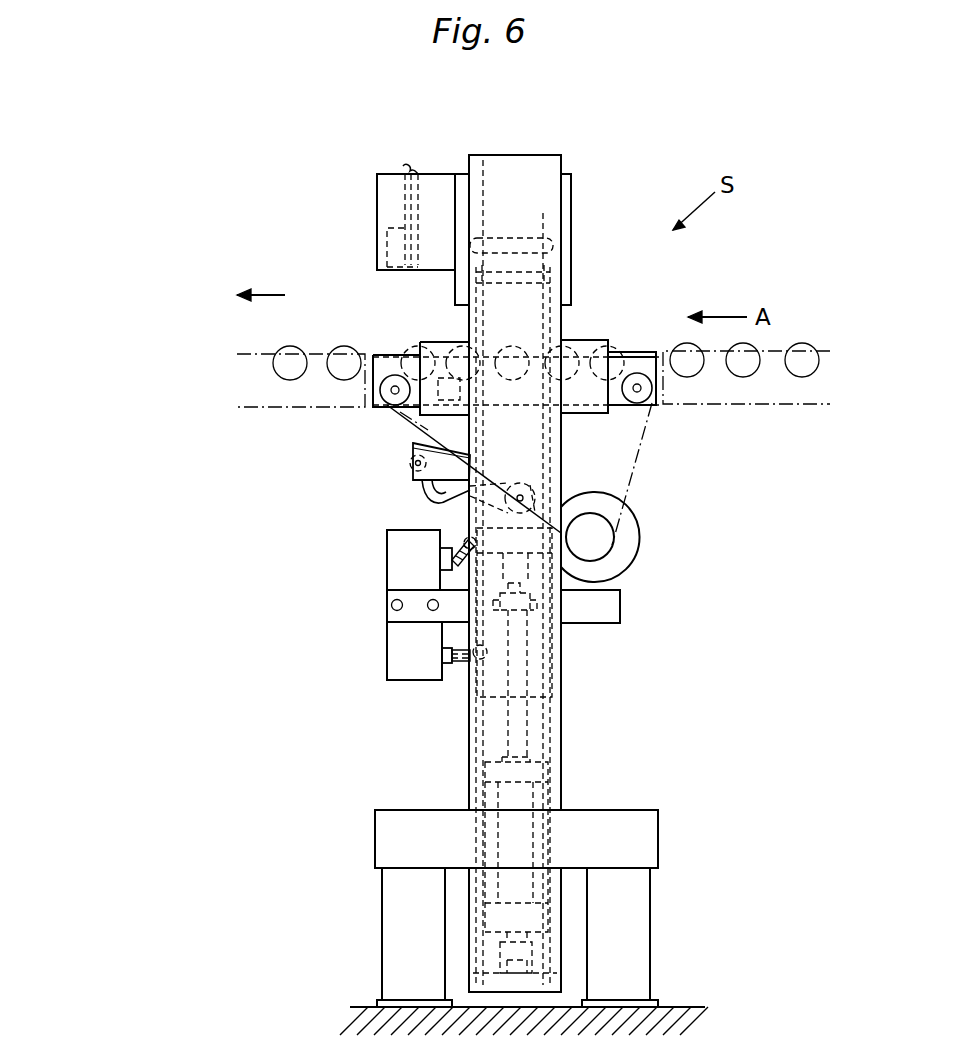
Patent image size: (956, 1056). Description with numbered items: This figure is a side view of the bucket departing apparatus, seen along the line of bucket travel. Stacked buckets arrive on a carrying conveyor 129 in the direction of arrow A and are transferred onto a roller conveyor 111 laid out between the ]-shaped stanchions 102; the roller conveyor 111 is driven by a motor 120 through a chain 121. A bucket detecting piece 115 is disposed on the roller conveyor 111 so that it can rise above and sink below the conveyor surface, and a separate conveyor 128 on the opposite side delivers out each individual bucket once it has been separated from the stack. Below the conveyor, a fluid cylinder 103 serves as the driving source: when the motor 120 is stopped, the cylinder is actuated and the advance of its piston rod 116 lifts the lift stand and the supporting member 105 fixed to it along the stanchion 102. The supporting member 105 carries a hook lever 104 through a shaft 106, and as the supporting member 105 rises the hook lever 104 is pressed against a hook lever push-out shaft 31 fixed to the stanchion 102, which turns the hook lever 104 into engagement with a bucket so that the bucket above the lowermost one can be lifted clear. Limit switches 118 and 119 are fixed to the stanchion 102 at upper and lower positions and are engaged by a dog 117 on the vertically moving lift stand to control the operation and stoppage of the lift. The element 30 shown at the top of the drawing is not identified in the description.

The head unit 30 is at (422, 193).
The hook lever push-out shaft 31 is at (553, 248).
The stanchion 102 is at (552, 742).
The fluid cylinder 103 is at (522, 795).
The hook lever 104 is at (483, 160).
The supporting member 105 is at (555, 645).
The shaft 106 is at (530, 285).
The roller conveyor 111 is at (633, 360).
The bucket detecting piece 115 is at (447, 347).
The piston rod 116 is at (527, 710).
The dog 117 is at (467, 570).
The limit switch 118 is at (457, 542).
The limit switch 119 is at (452, 665).
The motor 120 is at (612, 567).
The chain 121 is at (633, 483).
The conveyor 128 is at (330, 378).
The carrying conveyor 129 is at (752, 383).